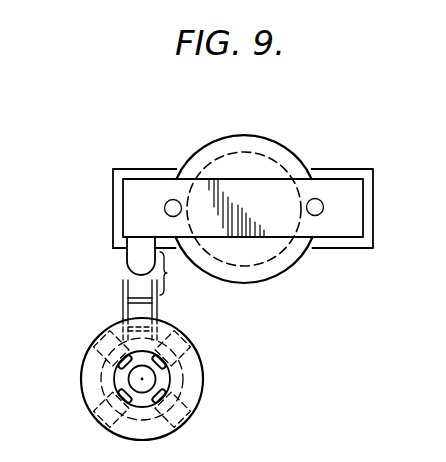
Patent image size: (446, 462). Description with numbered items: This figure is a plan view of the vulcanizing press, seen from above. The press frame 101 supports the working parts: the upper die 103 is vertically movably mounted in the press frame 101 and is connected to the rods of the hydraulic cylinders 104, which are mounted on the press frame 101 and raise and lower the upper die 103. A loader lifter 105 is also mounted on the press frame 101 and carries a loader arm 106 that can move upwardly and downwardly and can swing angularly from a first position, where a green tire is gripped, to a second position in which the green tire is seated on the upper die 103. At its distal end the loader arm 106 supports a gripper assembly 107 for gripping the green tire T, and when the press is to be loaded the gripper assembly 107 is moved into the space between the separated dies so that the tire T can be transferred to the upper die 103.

The press frame 101 is at (363, 204).
The upper die 103 is at (268, 147).
The hydraulic cylinders 104 is at (323, 204).
The loader lifter 105 is at (131, 254).
The loader arm 106 is at (123, 302).
The gripper assembly 107 is at (190, 373).
The wheel T is at (202, 392).